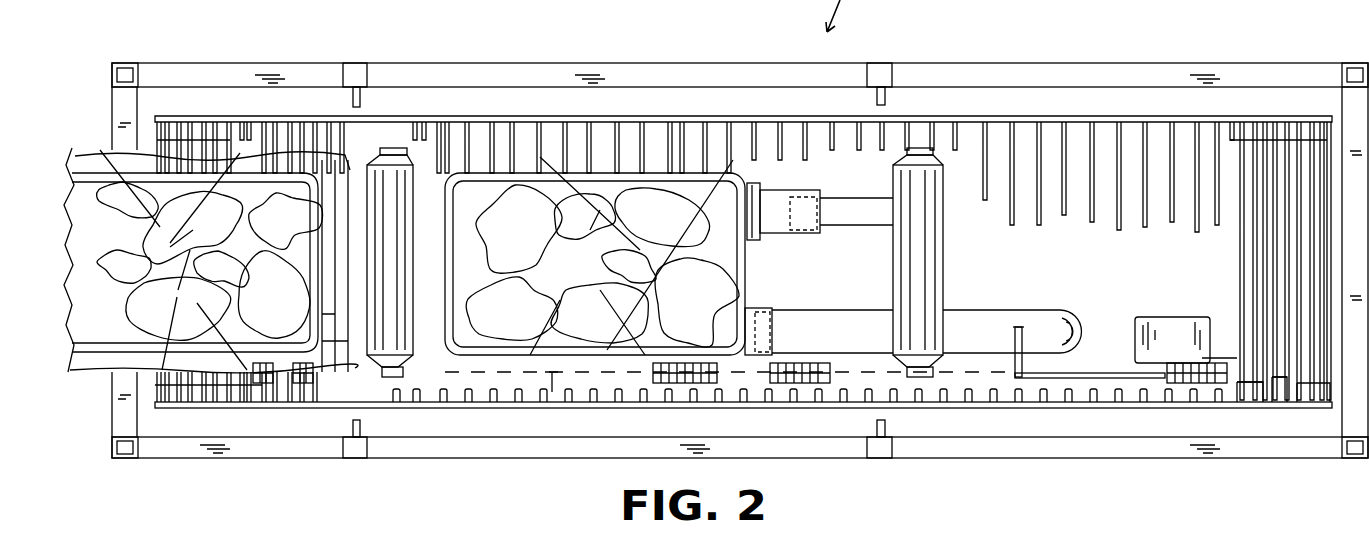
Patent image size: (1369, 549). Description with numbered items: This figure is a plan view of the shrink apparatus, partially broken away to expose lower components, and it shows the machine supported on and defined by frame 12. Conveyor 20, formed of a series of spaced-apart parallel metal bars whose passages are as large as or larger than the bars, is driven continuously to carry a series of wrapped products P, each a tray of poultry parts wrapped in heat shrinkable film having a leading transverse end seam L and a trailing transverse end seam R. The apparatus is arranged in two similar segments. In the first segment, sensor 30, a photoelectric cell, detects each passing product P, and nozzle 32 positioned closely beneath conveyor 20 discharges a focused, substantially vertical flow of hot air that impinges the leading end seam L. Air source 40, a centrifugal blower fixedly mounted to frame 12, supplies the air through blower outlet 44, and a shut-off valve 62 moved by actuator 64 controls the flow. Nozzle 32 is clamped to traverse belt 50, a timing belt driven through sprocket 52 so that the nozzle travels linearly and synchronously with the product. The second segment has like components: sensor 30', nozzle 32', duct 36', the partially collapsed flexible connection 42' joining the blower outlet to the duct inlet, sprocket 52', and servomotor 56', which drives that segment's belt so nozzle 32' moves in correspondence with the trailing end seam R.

The frame 12 is at (172, 457).
The conveyor 20 is at (1070, 116).
The sensor 30 is at (384, 65).
The sensor 30' is at (918, 63).
The nozzle 32 is at (416, 232).
The nozzle 32' is at (945, 262).
The duct 36' is at (856, 240).
The air source 40 is at (1040, 312).
The flexible connection 42' is at (795, 238).
The blower outlet 44 is at (752, 318).
The traverse belt 50 is at (557, 392).
The sprocket 52 is at (541, 399).
The sprocket 52' is at (1201, 333).
The servomotor 56' is at (1172, 311).
The shut-off valve 62 is at (1013, 378).
The actuator 64 is at (1278, 377).
The leading transverse end seam L is at (353, 362).
The trailing transverse end seam R is at (420, 365).
The product P is at (710, 272).